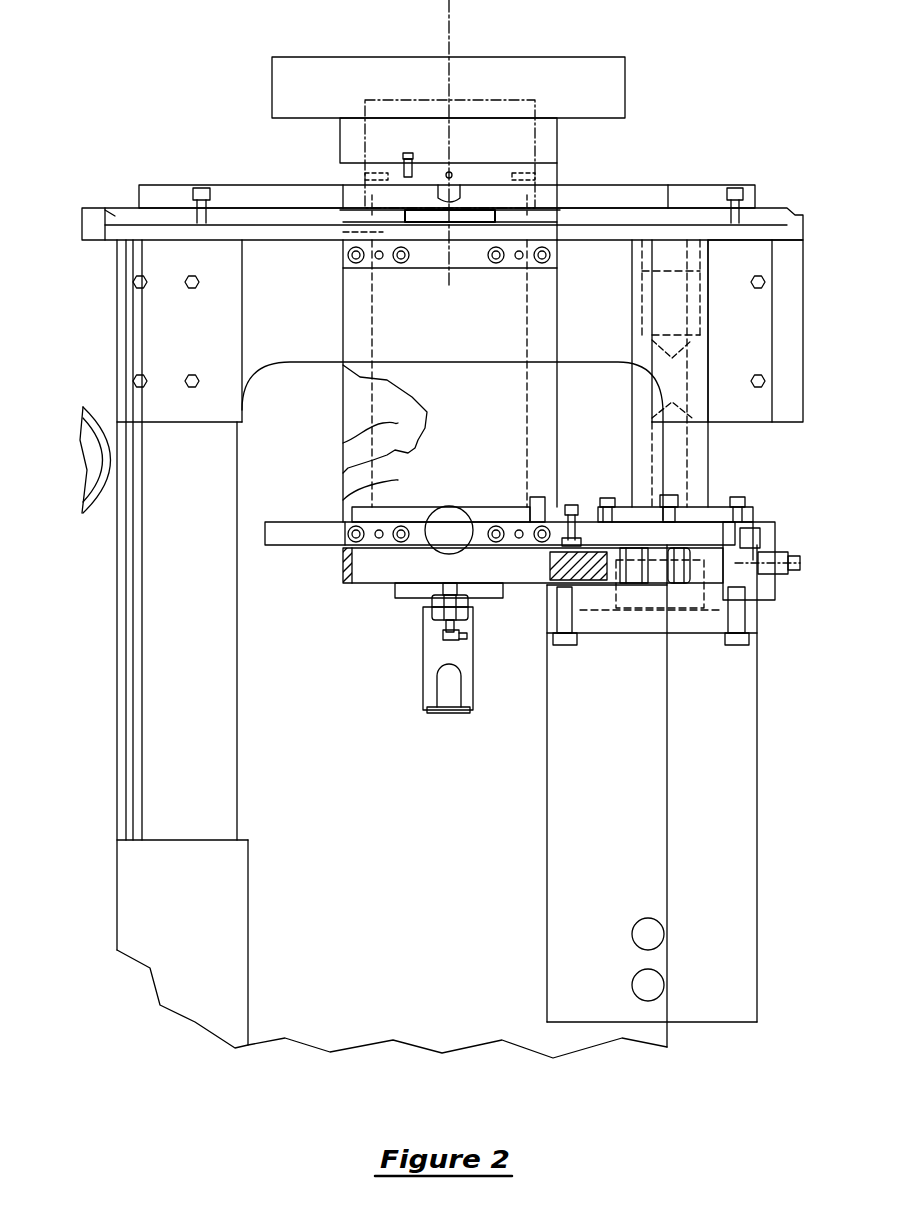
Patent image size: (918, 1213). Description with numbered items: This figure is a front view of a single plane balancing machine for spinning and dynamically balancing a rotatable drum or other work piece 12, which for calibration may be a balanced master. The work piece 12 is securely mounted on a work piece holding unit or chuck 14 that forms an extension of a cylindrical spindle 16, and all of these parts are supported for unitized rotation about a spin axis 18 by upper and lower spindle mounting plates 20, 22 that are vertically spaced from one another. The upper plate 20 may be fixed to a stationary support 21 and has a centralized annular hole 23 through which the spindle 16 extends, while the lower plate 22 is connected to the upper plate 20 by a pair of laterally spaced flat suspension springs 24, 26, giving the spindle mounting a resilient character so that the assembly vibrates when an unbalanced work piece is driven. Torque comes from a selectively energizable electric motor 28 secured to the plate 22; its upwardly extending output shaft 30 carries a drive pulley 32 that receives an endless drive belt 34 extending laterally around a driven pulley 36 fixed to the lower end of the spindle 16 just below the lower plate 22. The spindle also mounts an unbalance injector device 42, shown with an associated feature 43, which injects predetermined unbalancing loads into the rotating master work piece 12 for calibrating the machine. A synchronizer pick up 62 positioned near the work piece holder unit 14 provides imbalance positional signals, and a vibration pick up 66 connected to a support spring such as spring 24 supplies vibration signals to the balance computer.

The work piece 12 is at (627, 88).
The work piece holding unit 14 is at (398, 150).
The cylindrical spindle 16 is at (375, 423).
The spin axis 18 is at (452, 32).
The upper spindle mounting plate 20 is at (266, 226).
The stationary support 21 is at (150, 775).
The lower spindle mounting plate 22 is at (298, 540).
The annular hole 23 is at (383, 232).
The suspension spring 24 is at (380, 486).
The suspension spring 26 is at (372, 392).
The electric motor 28 is at (567, 810).
The output shaft 30 is at (650, 575).
The drive pulley 32 is at (677, 576).
The drive belt 34 is at (565, 574).
The driven pulley 36 is at (360, 577).
The unbalance injector device 42 is at (560, 152).
The interface plate 43 is at (545, 200).
The synchronizer pick up 62 is at (437, 627).
The vibration pick up 66 is at (451, 531).